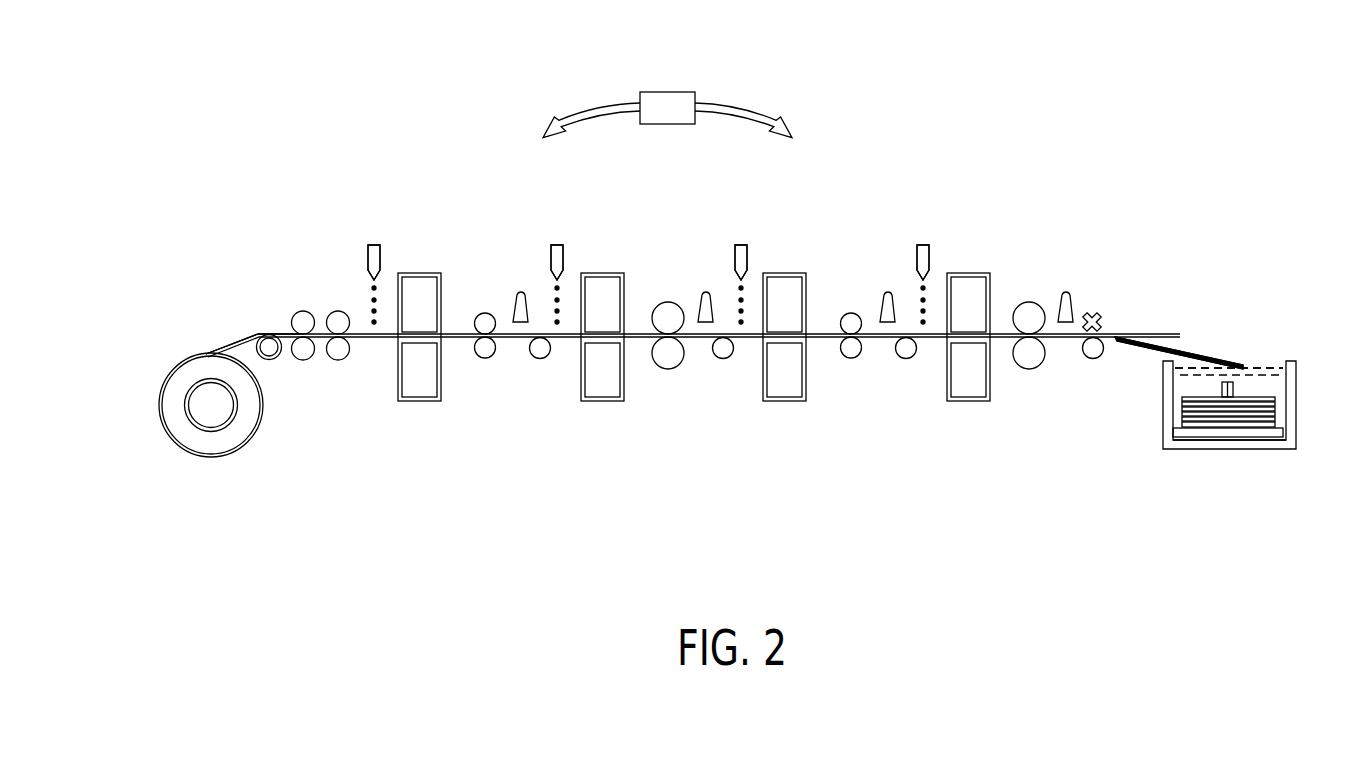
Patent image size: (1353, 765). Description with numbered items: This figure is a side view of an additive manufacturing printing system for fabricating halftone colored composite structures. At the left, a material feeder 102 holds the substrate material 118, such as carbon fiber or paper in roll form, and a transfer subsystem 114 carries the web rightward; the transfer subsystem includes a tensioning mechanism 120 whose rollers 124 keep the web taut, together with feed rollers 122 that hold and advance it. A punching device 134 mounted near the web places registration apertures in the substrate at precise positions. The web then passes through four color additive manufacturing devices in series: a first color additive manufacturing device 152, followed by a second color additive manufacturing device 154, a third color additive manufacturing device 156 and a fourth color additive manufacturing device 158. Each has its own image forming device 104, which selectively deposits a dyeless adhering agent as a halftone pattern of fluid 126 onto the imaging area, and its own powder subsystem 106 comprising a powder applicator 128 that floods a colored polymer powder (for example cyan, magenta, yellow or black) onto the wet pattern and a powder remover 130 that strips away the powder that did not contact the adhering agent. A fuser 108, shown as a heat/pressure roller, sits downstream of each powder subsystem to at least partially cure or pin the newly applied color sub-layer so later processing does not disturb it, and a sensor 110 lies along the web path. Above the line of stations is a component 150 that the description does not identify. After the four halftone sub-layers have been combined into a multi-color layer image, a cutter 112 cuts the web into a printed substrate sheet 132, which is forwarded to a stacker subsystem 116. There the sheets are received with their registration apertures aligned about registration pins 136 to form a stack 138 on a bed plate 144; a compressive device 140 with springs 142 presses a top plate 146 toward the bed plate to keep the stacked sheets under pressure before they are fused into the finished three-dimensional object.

The material feeder 102 is at (211, 457).
The image forming device 104 is at (374, 245).
The powder subsystem 106 is at (445, 271).
The fuser 108 is at (485, 313).
The sensor 110 is at (521, 292).
The cutter 112 is at (1100, 314).
The transfer subsystem 114 is at (278, 331).
The stacker subsystem 116 is at (1203, 452).
The substrate material 118 is at (237, 338).
The tensioning mechanism 120 is at (260, 331).
The feed rollers 122 is at (340, 311).
The rollers 124 is at (276, 359).
The pattern of fluid 126 is at (383, 300).
The powder applicator 128 is at (420, 277).
The powder remover 130 is at (420, 397).
The printed substrate sheet 132 is at (1200, 350).
The punching device 134 is at (314, 322).
The registration pins 136 is at (1222, 390).
The stack 138 is at (1172, 406).
The compressive device 140 is at (1279, 358).
The springs 142 is at (1236, 360).
The bed plate 144 is at (1173, 437).
The top plate 146 is at (1257, 362).
The controller 150 is at (666, 92).
The first color additive manufacturing device 152 is at (359, 249).
The second color additive manufacturing device 154 is at (582, 213).
The third color additive manufacturing device 156 is at (797, 193).
The fourth color additive manufacturing device 158 is at (980, 195).